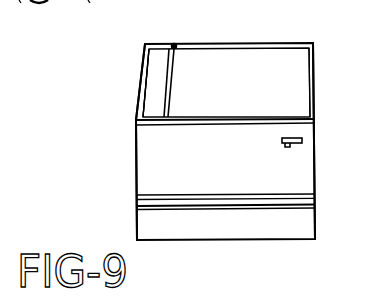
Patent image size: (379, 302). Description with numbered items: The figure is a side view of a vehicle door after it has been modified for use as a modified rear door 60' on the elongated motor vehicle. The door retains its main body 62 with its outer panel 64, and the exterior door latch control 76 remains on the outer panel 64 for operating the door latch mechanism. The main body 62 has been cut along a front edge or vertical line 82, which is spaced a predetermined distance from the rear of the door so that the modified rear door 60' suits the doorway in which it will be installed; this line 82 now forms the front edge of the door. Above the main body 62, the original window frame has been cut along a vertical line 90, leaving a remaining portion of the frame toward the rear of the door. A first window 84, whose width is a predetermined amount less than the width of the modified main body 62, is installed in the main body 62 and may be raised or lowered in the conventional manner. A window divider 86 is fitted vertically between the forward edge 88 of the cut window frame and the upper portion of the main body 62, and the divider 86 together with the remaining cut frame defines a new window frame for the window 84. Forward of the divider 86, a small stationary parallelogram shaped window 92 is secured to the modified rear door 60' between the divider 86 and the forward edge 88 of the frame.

The modified rear door 60' is at (252, 141).
The main body 62 is at (316, 165).
The outer panel 64 is at (222, 172).
The exterior door latch control 76 is at (284, 148).
The front edge or vertical line 82 is at (137, 173).
The first window 84 is at (240, 101).
The window divider 86 is at (178, 61).
The forward edge of the cut window frame 88 is at (174, 44).
The vertical line 90 is at (137, 88).
The small stationary parallelogram shaped window 92 is at (155, 63).